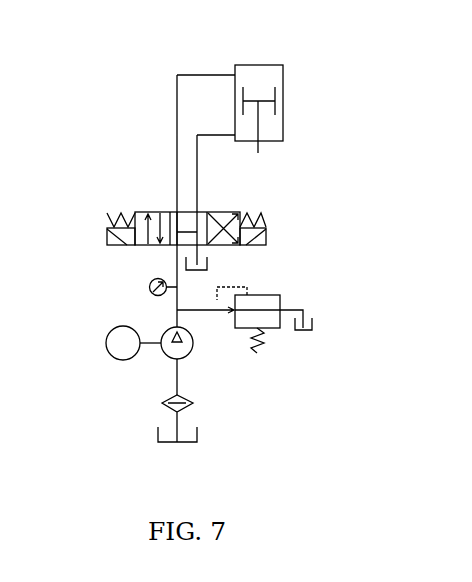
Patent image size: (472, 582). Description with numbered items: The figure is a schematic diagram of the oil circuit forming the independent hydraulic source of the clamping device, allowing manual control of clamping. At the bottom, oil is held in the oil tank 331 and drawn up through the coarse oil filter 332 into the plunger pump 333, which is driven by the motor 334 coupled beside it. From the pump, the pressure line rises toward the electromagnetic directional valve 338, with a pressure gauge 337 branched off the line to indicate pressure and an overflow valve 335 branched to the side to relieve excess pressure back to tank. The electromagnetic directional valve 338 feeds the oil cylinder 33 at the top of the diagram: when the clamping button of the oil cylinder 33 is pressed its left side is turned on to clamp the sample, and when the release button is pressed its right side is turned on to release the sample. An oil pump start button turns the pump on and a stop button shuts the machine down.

The oil cylinder 33 is at (258, 66).
The electromagnetic directional valve 338 is at (207, 211).
The pressure gauge 337 is at (149, 287).
The overflow valve 335 is at (273, 294).
The motor 334 is at (117, 361).
The plunger pump 333 is at (195, 348).
The coarse oil filter 332 is at (192, 402).
The oil tank 331 is at (183, 443).